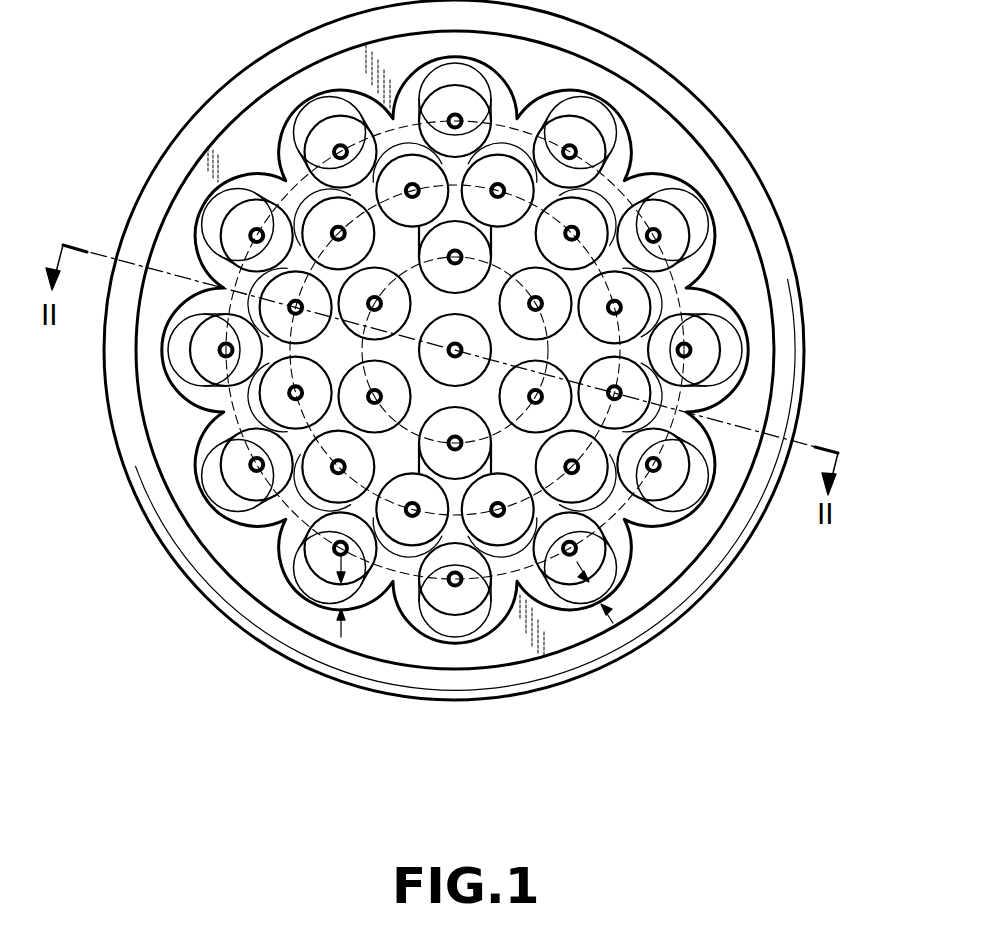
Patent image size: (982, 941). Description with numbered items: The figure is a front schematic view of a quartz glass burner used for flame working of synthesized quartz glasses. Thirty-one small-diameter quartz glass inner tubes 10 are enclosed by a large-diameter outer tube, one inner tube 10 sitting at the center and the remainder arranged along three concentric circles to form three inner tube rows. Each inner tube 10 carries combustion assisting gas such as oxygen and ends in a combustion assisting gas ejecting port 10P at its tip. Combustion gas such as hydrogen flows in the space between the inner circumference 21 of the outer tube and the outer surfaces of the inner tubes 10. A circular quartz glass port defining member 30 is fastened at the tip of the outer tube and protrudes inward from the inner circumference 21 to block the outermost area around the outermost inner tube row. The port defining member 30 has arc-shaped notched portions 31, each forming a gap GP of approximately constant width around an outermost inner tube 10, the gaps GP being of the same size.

The inner tube 10 is at (722, 348).
The combustion assisting gas ejecting port 10P is at (662, 230).
The inner circumference of the outer tube 21 is at (305, 580).
The port defining member 30 is at (384, 643).
The notched portion 31 is at (405, 612).
The gap GP is at (337, 597).